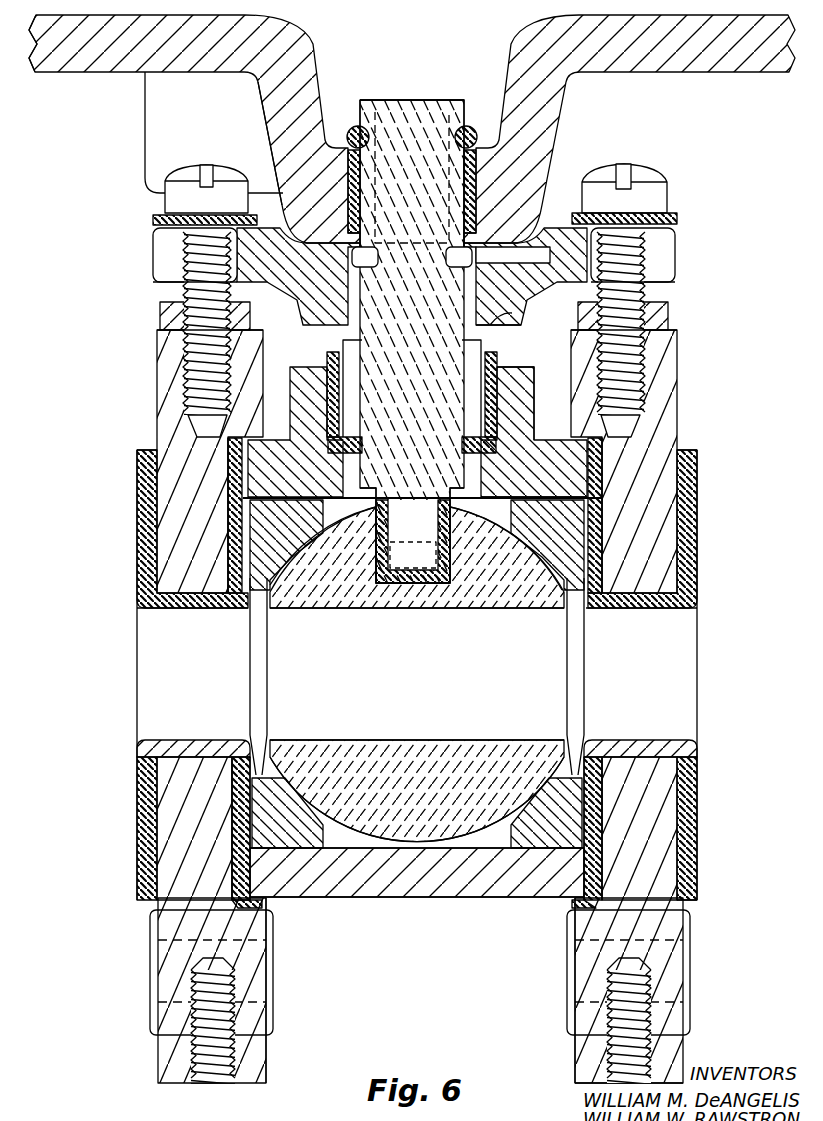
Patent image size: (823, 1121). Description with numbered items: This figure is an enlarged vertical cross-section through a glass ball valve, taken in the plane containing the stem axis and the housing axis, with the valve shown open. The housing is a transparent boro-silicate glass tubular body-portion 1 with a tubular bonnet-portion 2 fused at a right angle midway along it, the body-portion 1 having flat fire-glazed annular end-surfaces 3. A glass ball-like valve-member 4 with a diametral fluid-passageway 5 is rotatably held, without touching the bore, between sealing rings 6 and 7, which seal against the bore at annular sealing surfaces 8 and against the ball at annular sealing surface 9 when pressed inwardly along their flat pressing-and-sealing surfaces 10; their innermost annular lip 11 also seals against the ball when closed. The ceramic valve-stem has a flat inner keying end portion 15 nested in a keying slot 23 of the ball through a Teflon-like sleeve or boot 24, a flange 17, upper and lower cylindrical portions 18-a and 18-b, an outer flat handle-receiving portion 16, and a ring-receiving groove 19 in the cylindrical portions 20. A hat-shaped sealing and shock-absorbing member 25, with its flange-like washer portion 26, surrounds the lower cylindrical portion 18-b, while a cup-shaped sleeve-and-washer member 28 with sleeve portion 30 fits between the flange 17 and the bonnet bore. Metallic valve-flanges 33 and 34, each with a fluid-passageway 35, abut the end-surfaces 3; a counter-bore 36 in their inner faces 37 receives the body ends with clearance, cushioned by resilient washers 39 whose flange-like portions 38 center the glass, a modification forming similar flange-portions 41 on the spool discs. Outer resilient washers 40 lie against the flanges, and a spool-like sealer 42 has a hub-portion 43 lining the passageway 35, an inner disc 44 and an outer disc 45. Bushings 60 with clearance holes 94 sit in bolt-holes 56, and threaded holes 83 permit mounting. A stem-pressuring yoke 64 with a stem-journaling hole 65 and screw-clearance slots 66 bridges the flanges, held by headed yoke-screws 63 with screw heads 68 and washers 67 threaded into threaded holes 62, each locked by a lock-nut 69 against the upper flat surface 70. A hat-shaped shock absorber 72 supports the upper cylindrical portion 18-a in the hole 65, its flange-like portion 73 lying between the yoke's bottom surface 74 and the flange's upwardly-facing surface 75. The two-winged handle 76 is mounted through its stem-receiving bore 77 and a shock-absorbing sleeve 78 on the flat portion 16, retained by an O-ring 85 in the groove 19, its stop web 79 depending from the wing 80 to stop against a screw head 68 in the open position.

The tubular body-portion 1 is at (392, 885).
The bonnet-portion 2 is at (520, 392).
The annular end-surfaces 3 is at (613, 863).
The valve-member 4 is at (435, 845).
The fluid-passageway 5 is at (443, 740).
The sealing ring 6 is at (348, 850).
The sealing ring 7 is at (490, 860).
The annular sealing surfaces 8 is at (538, 860).
The annular sealing surface 9 is at (553, 772).
The pressing-and-sealing surfaces 10 is at (597, 810).
The innermost annular lip 11 is at (567, 740).
The flat inner keying end portion 15 is at (412, 560).
The outer flat handle-receiving portion 16 is at (424, 108).
The flange 17 is at (412, 341).
The upper cylindrical portion 18-a is at (412, 212).
The lower cylindrical portion 18-b is at (412, 515).
The ring-receiving groove 19 is at (389, 98).
The cylindrical portions 20 is at (352, 110).
The keying slot 23 is at (433, 583).
The sleeve or boot 24 is at (462, 598).
The fluid-sealing and shock insulating and absorbing member 25 is at (475, 478).
The flange-like washer portion 26 is at (492, 445).
The cup-shaped sleeve-and-washer member 28 is at (328, 357).
The sleeve portion 30 is at (500, 358).
The metallic valve-flange 33 is at (165, 385).
The metallic valve-flange 34 is at (590, 1065).
The fluid-passageway 35 is at (645, 742).
The recess or counter-bore 36 is at (584, 473).
The inner faces 37 is at (575, 1053).
The outer flange-like portion 38 is at (577, 904).
The resilient washer or gasket 39 is at (604, 838).
The resilient washer 40 is at (693, 902).
The flange-portions 41 is at (690, 1054).
The spool-like fluid sealer and insulator 42 is at (711, 666).
The tubular hub-portion 43 is at (670, 604).
The inner disc 44 is at (589, 742).
The outer disc 45 is at (697, 758).
The bolt-holes 56 is at (690, 1014).
The bushings 60 is at (690, 958).
The threaded hole 62 is at (642, 399).
The headed yoke-screws 63 is at (645, 283).
The stem-pressuring yoke 64 is at (280, 236).
The stem-journaling hole 65 is at (375, 262).
The screw-clearance slots 66 is at (667, 256).
The washer 67 is at (677, 218).
The screw head 68 is at (653, 192).
The lock-nut 69 is at (663, 315).
The upper flat surface 70 is at (672, 330).
The hat-shaped shock absorber 72 is at (515, 318).
The flange-like portion 73 is at (343, 334).
The bottom surface 74 is at (505, 320).
The upwardly-facing surface 75 is at (500, 336).
The two-winged handle 76 is at (579, 84).
The stem-receiving bore 77 is at (480, 178).
The shock-absorbing sleeve 78 is at (348, 163).
The stop web 79 is at (155, 121).
The wing 80 is at (66, 72).
The threaded hole 83 is at (212, 1083).
The O-ring 85 is at (472, 138).
The clearance holes 94 is at (180, 995).